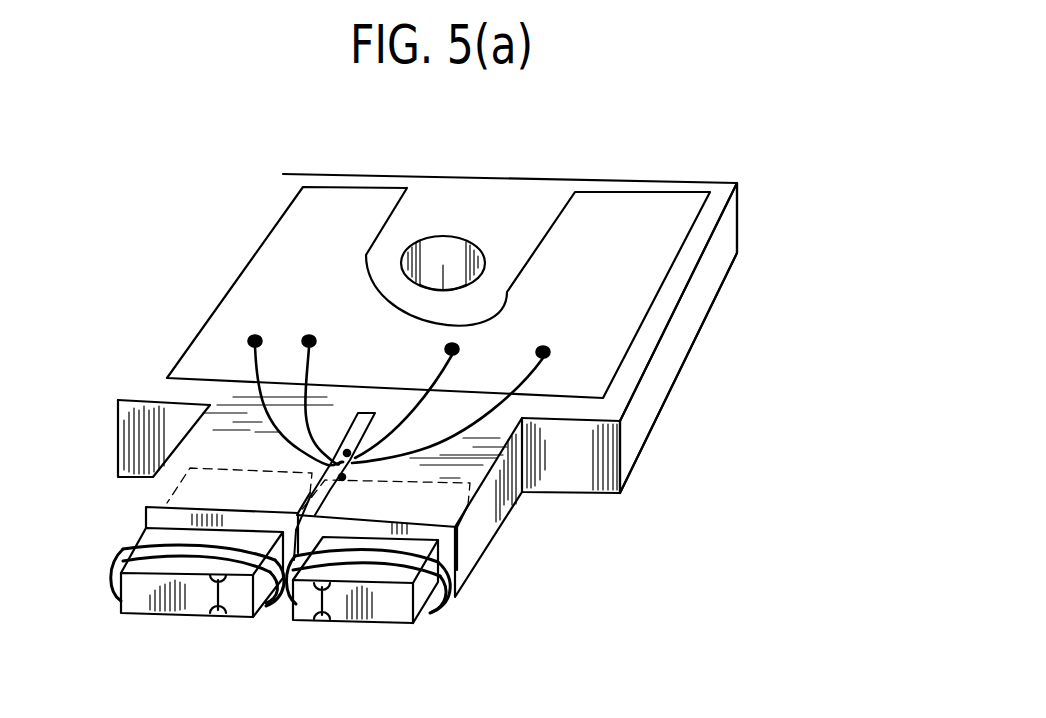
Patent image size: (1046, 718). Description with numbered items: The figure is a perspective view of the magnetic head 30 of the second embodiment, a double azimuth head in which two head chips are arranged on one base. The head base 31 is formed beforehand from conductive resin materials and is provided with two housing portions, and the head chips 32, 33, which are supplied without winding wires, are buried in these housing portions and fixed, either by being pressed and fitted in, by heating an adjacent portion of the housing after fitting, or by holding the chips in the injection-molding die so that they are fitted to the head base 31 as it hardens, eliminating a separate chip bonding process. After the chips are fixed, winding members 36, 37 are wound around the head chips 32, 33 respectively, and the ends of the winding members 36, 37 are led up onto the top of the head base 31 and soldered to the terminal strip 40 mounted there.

The magnetic head 30 is at (752, 243).
The head base 31 is at (653, 405).
The head chip 32 is at (140, 609).
The head chip 33 is at (390, 608).
The winding member 36 is at (130, 550).
The winding member 37 is at (473, 560).
The terminal strip 40 is at (628, 212).